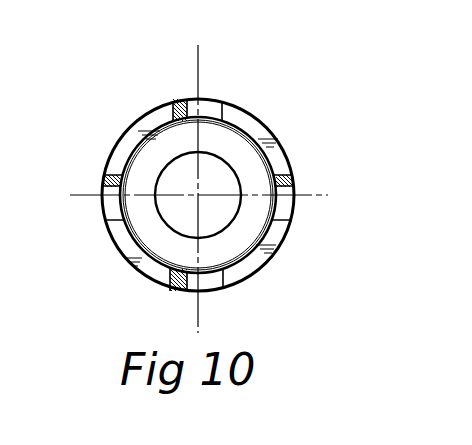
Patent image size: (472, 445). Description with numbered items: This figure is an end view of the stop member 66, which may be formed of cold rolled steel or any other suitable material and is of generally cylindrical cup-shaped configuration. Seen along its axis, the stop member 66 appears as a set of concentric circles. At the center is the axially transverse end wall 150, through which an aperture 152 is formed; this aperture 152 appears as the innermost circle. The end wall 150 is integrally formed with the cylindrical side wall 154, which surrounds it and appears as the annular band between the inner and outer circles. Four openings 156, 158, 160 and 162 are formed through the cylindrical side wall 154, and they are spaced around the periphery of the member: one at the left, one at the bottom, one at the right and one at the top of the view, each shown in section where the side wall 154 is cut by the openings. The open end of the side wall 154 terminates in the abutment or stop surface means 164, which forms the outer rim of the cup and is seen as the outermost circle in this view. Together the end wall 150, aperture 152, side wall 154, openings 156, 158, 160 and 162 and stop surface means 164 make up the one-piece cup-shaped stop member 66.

The stop member 66 is at (264, 116).
The end wall 150 is at (236, 230).
The aperture 152 is at (163, 165).
The cylindrical side wall 154 is at (130, 248).
The opening 156 is at (100, 182).
The opening 158 is at (186, 290).
The opening 160 is at (302, 180).
The opening 162 is at (186, 99).
The abutment or stop surface means 164 is at (138, 136).